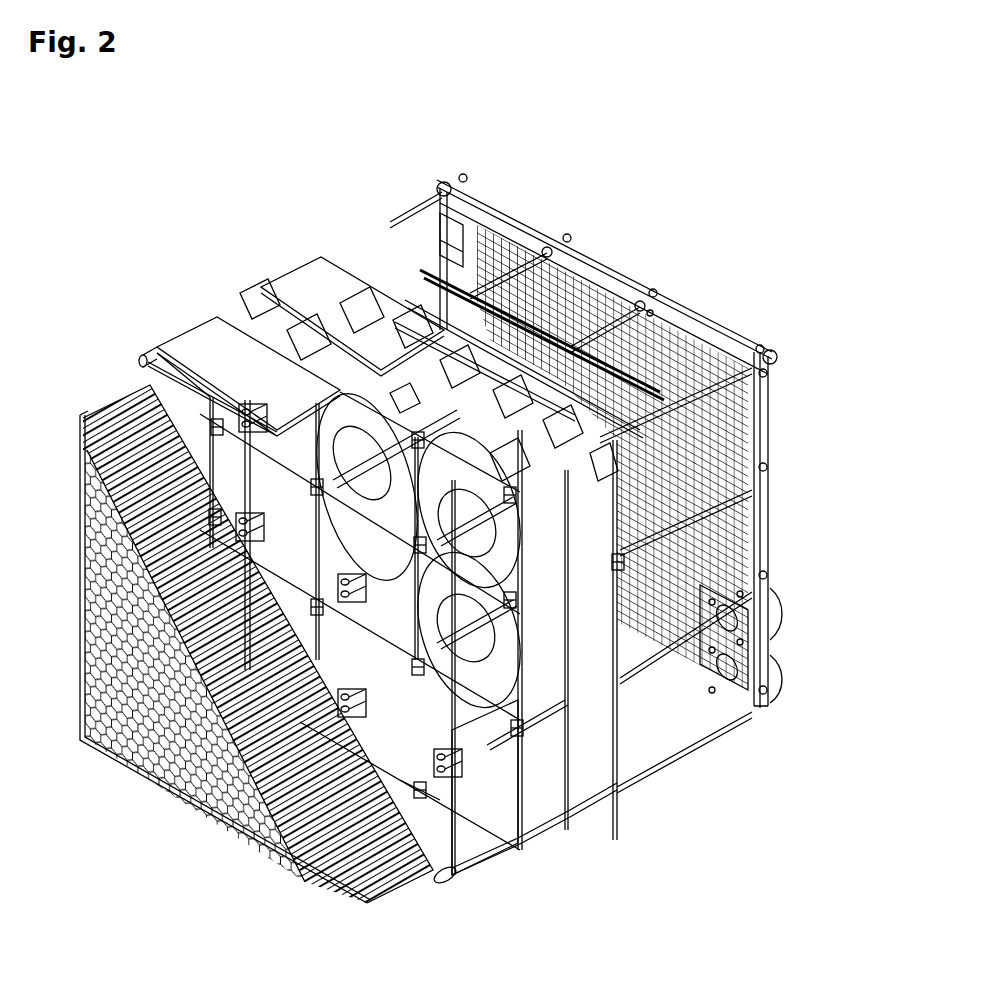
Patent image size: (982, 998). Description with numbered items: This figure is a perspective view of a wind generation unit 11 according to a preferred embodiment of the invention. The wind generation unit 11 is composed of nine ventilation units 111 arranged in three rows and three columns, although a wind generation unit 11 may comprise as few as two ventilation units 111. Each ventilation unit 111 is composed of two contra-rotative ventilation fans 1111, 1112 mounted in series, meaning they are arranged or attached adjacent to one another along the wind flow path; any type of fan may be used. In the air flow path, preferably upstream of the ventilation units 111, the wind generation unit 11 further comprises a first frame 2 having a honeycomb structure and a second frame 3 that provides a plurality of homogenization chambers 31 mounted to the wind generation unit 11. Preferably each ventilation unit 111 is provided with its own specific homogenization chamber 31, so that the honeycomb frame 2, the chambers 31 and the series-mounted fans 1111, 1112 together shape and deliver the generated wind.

The first frame 2 is at (187, 765).
The second frame 3 is at (488, 842).
The homogenization chamber 31 is at (420, 798).
The wind generation unit 11 is at (708, 288).
The ventilation unit 111 is at (592, 817).
The ventilation fan 1111 is at (330, 302).
The ventilation fan 1112 is at (268, 322).